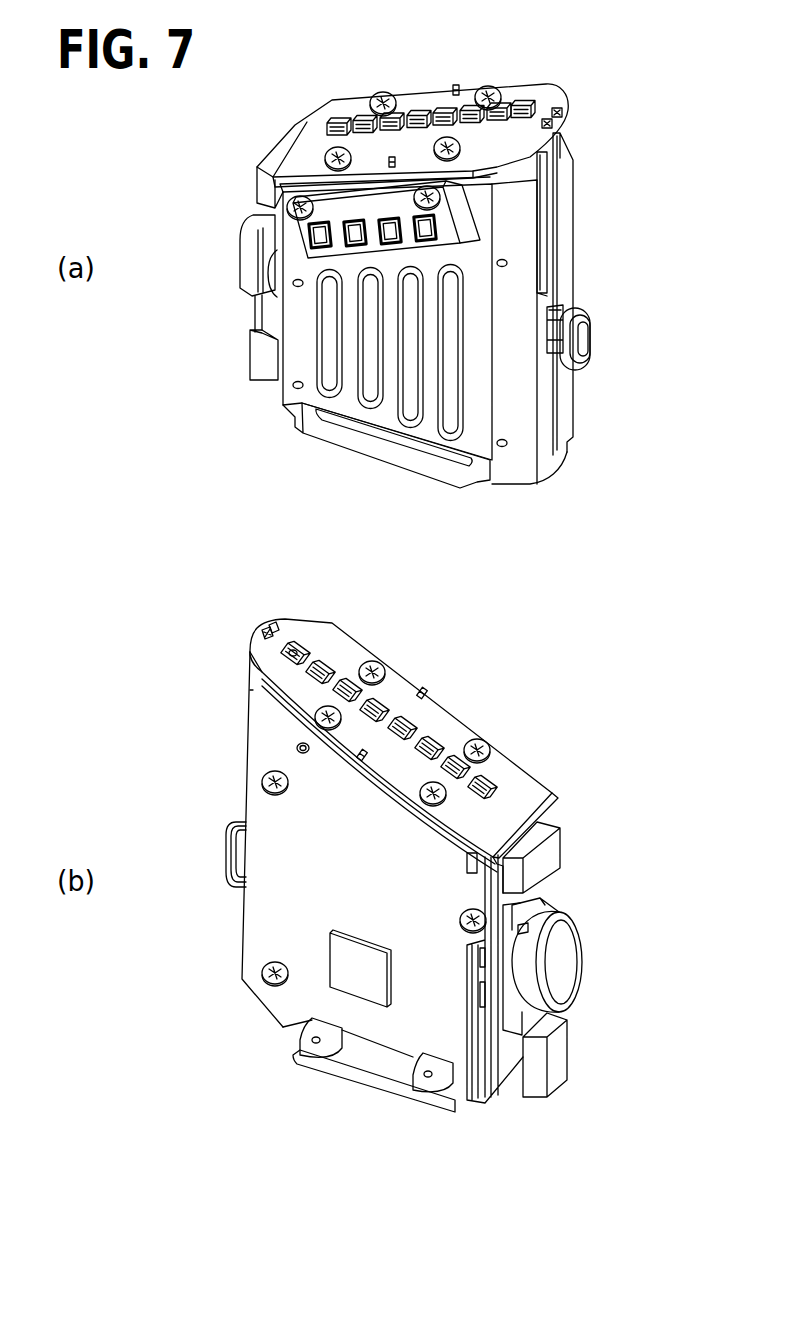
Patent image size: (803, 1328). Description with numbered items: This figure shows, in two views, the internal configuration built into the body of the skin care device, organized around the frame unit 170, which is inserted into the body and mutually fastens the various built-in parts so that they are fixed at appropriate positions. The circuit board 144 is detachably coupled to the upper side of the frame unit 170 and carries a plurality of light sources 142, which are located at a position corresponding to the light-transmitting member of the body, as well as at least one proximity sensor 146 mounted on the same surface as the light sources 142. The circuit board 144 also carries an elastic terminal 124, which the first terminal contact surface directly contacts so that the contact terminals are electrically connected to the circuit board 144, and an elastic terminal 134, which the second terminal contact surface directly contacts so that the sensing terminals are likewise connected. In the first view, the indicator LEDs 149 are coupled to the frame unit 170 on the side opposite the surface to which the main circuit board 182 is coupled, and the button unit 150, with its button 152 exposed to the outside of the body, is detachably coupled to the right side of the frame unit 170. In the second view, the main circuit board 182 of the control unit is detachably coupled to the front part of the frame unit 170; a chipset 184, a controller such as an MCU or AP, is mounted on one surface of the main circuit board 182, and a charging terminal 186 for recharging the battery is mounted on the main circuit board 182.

The elastic terminal 124 is at (455, 85).
The elastic terminal 134 is at (553, 124).
The light sources 142 is at (338, 122).
The circuit board 144 is at (548, 95).
The proximity sensor 146 is at (524, 104).
The indicator LEDs 149 is at (295, 234).
The button unit 150 is at (238, 263).
The button 152 is at (583, 966).
The frame unit 170 is at (522, 406).
The main circuit board 182 is at (574, 222).
The chipset 184 is at (340, 987).
The charging terminal 186 is at (592, 330).